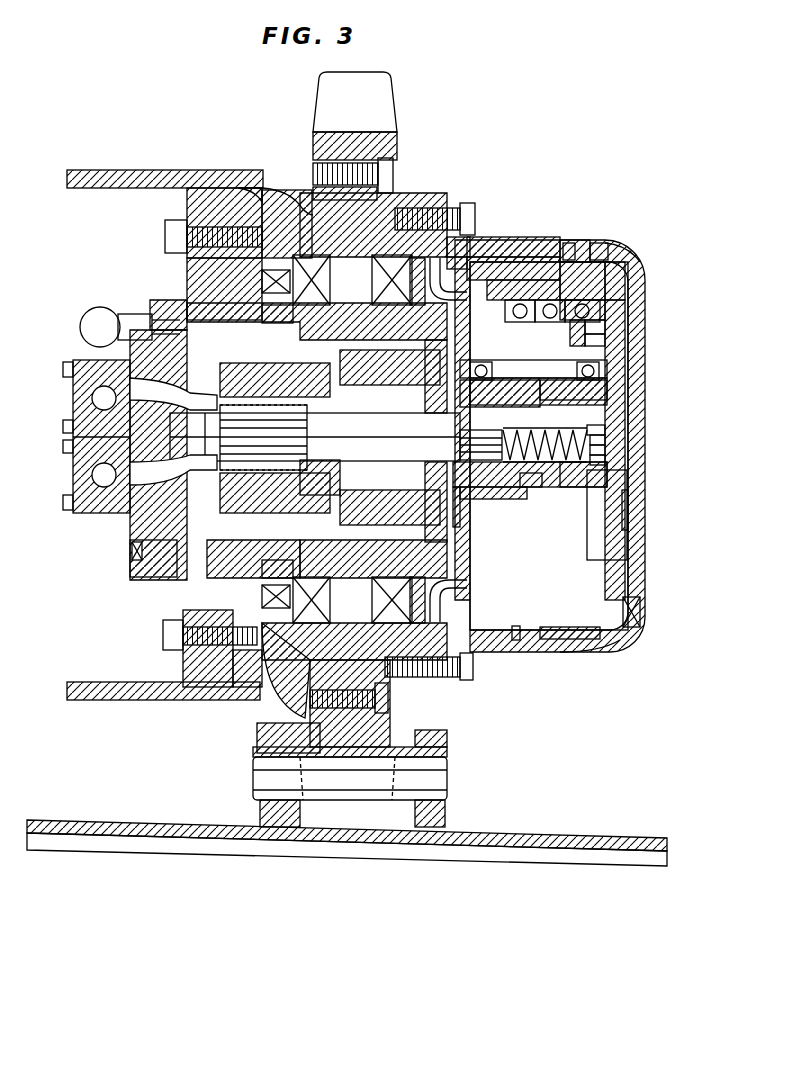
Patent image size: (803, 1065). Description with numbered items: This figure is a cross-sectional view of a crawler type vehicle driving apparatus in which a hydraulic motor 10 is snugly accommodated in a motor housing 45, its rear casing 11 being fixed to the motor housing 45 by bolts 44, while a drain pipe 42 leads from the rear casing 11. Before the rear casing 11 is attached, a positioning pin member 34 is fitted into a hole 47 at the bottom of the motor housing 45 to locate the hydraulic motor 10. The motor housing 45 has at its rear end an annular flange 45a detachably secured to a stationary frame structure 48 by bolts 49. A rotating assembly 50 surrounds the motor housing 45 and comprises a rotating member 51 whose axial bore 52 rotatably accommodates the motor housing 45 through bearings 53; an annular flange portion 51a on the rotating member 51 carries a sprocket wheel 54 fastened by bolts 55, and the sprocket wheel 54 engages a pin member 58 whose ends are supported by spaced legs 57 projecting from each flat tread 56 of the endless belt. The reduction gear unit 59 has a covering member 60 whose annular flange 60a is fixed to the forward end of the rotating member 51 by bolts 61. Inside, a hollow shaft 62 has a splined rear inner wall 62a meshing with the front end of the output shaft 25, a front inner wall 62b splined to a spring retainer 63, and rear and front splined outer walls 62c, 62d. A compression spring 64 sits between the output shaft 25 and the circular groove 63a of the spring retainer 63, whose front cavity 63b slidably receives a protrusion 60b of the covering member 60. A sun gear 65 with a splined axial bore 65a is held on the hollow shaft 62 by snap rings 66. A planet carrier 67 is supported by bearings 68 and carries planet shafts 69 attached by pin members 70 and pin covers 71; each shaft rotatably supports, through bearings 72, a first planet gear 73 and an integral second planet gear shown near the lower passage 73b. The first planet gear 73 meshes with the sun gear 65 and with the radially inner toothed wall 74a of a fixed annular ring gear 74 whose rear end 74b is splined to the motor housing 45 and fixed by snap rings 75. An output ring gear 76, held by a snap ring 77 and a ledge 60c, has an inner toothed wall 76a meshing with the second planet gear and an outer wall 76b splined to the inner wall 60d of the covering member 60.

The hydraulic motor 10 is at (215, 590).
The rear casing 11 is at (135, 570).
The output shaft 25 is at (480, 462).
The positioning pin member 34 is at (305, 312).
The drain pipe 42 is at (95, 325).
The bolts 44 is at (205, 300).
The motor housing 45 is at (210, 272).
The annular flange 45a is at (262, 180).
The hole 47 is at (420, 356).
The stationary frame structure 48 is at (180, 190).
The bolts 49 is at (163, 633).
The rotating assembly 50 is at (315, 130).
The rotating member 51 is at (322, 215).
The annular flange portion 51a is at (316, 186).
The axial bore 52 is at (385, 245).
The bearings 53 is at (300, 252).
The sprocket wheel 54 is at (390, 150).
The bolts / endless belt 55 is at (393, 175).
The flat treads 56 is at (390, 842).
The legs 57 is at (262, 728).
The pin member 58 is at (440, 770).
The reduction gear unit 59 is at (652, 381).
The covering member 60 is at (648, 250).
The annular flange 60a is at (455, 237).
The protrusion 60b is at (602, 452).
The ledge 60c is at (605, 652).
The inner wall 60d is at (608, 243).
The bolts 61 is at (470, 201).
The hollow shaft 62 is at (545, 498).
The splined rear inner wall 62a is at (540, 482).
The front inner wall 62b is at (585, 473).
The rear splined outer wall 62c is at (572, 393).
The front splined outer wall 62d is at (604, 470).
The spring retainer 63 is at (625, 420).
The circular groove 63a is at (602, 443).
The cavity 63b is at (602, 462).
The compression spring 64 is at (555, 475).
The sun gear 65 is at (512, 495).
The splined axial bore 65a is at (505, 392).
The snap rings 66 is at (580, 380).
The planet carrier 67 is at (628, 553).
The bearings 68 is at (628, 512).
The planet shafts 69 is at (622, 357).
The pin members 70 is at (518, 322).
The pin covers 71 is at (548, 322).
The bearings 72 is at (582, 322).
The first planet gear 73 is at (500, 257).
The lower passage 73b is at (425, 570).
The fixed annular ring gear 74 is at (522, 237).
The radially inner toothed wall 74a is at (540, 280).
The rear end 74b is at (432, 290).
The snap rings 75 is at (425, 226).
The output ring gear 76 is at (590, 262).
The radially inner toothed wall 76a is at (618, 252).
The radially outer wall 76b is at (590, 243).
The snap ring 77 is at (569, 243).